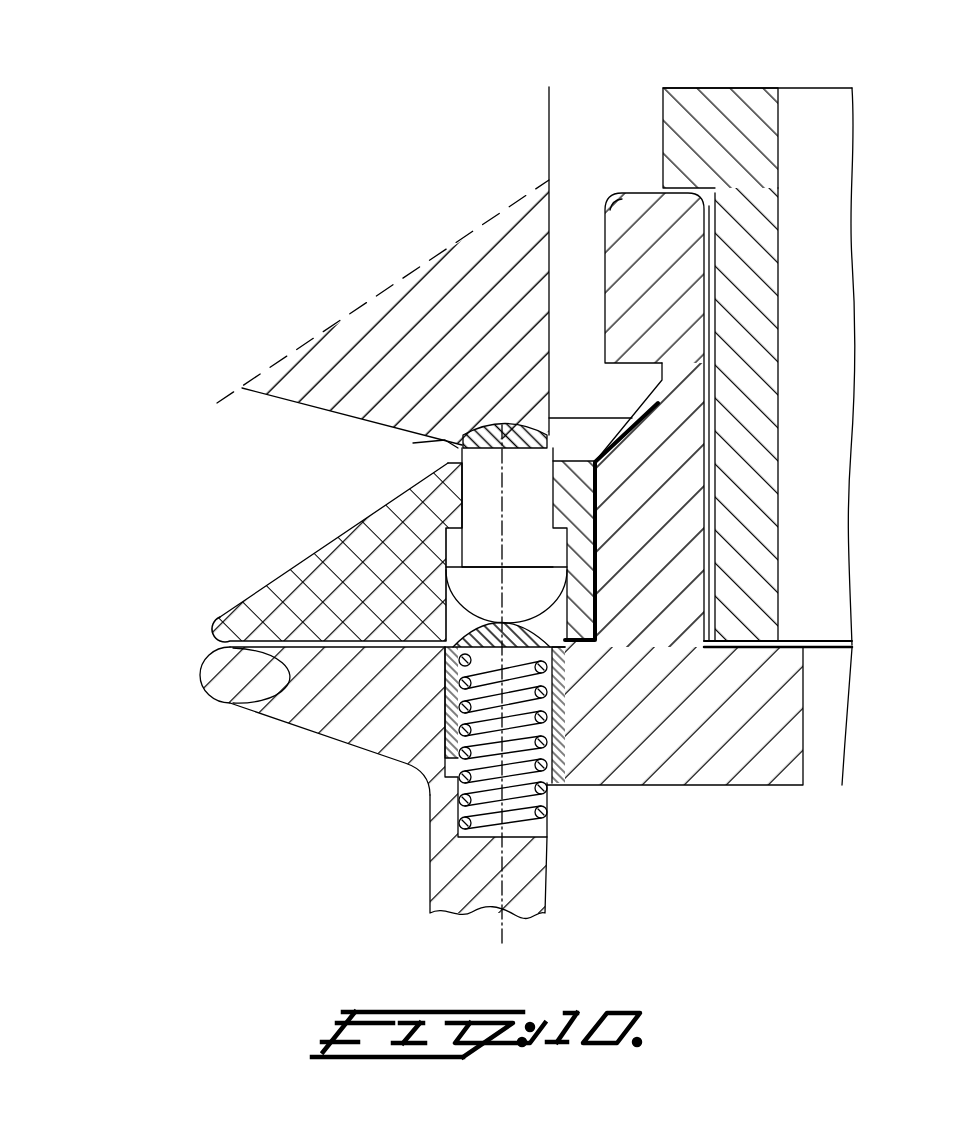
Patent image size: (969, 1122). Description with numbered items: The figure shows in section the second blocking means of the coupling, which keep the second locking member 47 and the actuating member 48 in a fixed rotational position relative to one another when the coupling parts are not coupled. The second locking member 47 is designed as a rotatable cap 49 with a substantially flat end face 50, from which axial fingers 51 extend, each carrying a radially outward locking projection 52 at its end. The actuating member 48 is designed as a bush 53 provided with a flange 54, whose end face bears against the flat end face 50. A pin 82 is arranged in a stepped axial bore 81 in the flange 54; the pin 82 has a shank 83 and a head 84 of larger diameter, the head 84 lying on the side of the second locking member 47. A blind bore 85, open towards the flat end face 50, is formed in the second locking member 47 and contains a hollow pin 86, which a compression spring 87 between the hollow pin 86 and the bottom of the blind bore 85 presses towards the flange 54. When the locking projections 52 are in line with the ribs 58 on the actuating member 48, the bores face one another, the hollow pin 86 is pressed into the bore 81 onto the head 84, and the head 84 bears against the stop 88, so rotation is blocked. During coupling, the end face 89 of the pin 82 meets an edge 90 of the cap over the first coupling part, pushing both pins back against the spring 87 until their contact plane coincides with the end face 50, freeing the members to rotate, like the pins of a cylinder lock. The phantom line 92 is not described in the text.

The second locking member 47 is at (347, 745).
The actuating member 48 is at (283, 563).
The rotatable cap 49 is at (457, 877).
The flat end face 50 is at (230, 703).
The axial fingers 51 is at (657, 548).
The locking projections 52 is at (613, 262).
The bush 53 is at (750, 317).
The flange 54 is at (320, 613).
The ribs 58 is at (703, 112).
The stepped axial bore 81 is at (320, 597).
The pin 82 is at (497, 520).
The shank 83 is at (455, 447).
The head 84 is at (287, 718).
The blind bore 85 is at (582, 783).
The hollow pin 86 is at (568, 682).
The compression spring 87 is at (527, 735).
The stop 88 is at (593, 507).
The end face 89 is at (483, 420).
The edge 90 is at (460, 432).
The phantom line 92 is at (508, 250).